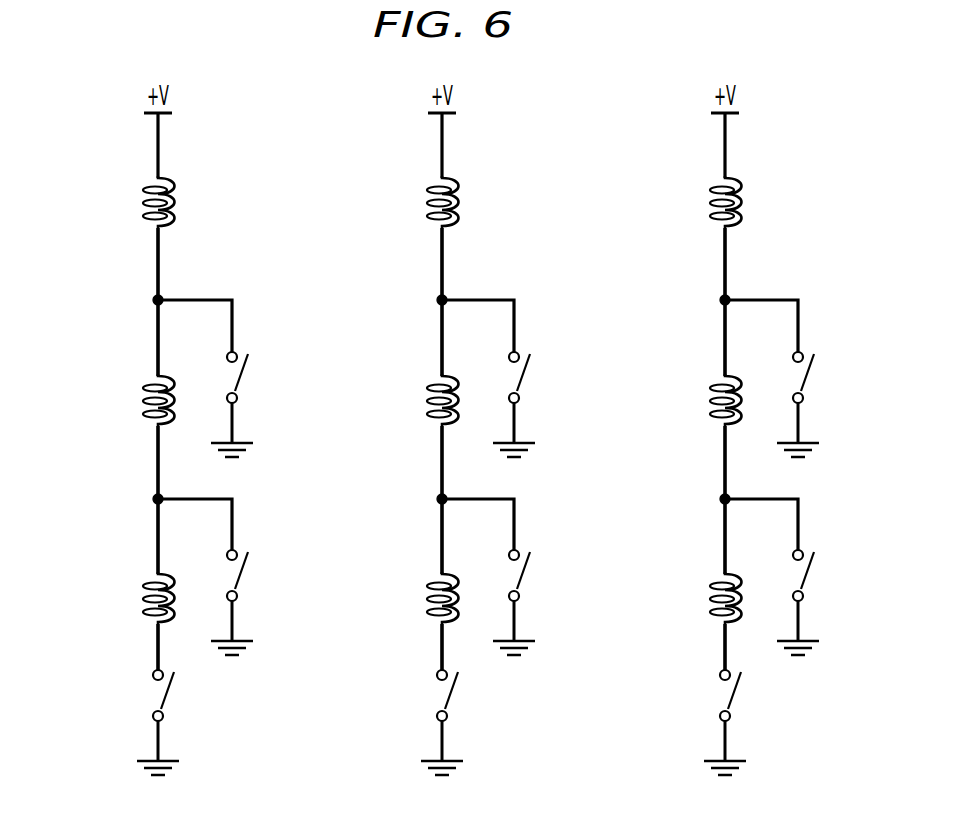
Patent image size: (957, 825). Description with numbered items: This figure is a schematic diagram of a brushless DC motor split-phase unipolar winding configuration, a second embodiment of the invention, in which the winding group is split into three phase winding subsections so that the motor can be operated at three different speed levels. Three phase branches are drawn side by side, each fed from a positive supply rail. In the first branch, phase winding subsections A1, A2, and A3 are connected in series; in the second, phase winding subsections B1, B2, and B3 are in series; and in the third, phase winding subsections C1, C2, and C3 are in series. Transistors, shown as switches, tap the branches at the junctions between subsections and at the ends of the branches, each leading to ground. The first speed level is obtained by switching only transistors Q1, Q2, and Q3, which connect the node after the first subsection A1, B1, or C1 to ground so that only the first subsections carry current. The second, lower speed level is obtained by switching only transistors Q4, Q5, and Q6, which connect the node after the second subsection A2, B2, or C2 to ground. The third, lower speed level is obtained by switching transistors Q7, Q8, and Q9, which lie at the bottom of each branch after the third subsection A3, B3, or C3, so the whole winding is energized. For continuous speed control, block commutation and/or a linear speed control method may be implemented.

The transistor Q1 is at (245, 404).
The transistor Q2 is at (527, 404).
The transistor Q3 is at (811, 404).
The transistor Q4 is at (245, 602).
The transistor Q5 is at (527, 602).
The transistor Q6 is at (811, 602).
The transistor Q7 is at (172, 722).
The transistor Q8 is at (456, 722).
The transistor Q9 is at (739, 722).
The phase winding subsection A1 is at (106, 202).
The phase winding subsection A2 is at (106, 400).
The phase winding subsection A3 is at (106, 598).
The phase winding subsection B1 is at (389, 202).
The phase winding subsection B2 is at (389, 400).
The phase winding subsection B3 is at (389, 598).
The phase winding subsection C1 is at (672, 202).
The phase winding subsection C2 is at (672, 400).
The phase winding subsection C3 is at (672, 598).